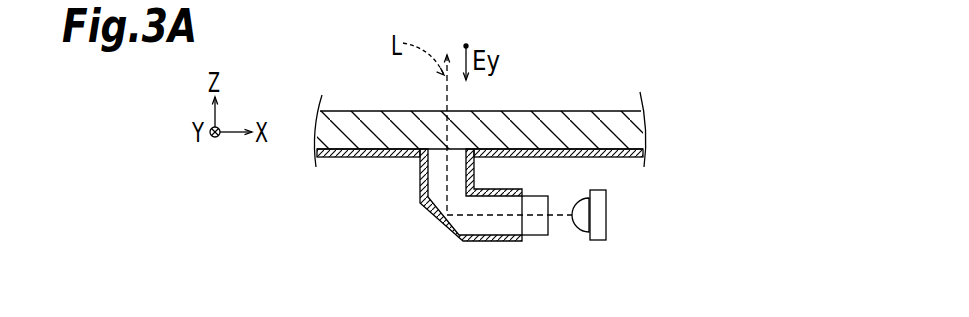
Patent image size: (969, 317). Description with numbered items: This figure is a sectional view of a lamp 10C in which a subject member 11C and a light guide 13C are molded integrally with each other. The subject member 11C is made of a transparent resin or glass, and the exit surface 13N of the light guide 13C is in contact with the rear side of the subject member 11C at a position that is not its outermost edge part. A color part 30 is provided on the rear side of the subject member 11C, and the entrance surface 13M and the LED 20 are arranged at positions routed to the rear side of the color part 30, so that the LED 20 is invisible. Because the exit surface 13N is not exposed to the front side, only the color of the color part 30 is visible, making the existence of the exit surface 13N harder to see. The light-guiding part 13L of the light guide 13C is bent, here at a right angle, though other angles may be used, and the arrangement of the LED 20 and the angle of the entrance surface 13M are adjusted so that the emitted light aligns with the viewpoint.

The lamp 10C is at (523, 53).
The subject member 11C is at (558, 130).
The color part 30 is at (388, 160).
The exit surface 13N is at (433, 148).
The light-guiding part 13L is at (473, 227).
The light guide 13C is at (530, 236).
The entrance surface 13M is at (552, 226).
The LED 20 is at (611, 216).